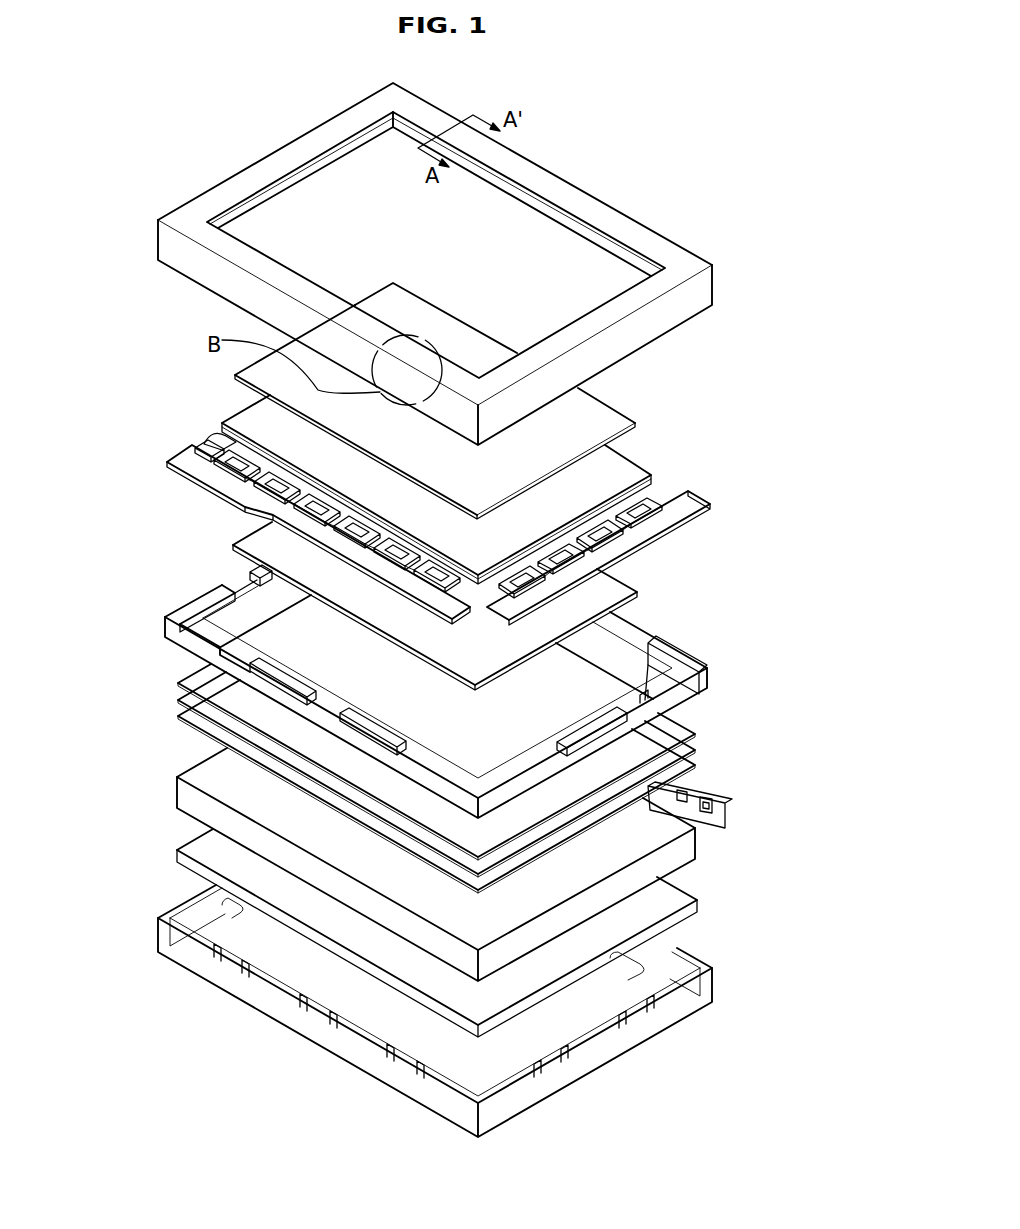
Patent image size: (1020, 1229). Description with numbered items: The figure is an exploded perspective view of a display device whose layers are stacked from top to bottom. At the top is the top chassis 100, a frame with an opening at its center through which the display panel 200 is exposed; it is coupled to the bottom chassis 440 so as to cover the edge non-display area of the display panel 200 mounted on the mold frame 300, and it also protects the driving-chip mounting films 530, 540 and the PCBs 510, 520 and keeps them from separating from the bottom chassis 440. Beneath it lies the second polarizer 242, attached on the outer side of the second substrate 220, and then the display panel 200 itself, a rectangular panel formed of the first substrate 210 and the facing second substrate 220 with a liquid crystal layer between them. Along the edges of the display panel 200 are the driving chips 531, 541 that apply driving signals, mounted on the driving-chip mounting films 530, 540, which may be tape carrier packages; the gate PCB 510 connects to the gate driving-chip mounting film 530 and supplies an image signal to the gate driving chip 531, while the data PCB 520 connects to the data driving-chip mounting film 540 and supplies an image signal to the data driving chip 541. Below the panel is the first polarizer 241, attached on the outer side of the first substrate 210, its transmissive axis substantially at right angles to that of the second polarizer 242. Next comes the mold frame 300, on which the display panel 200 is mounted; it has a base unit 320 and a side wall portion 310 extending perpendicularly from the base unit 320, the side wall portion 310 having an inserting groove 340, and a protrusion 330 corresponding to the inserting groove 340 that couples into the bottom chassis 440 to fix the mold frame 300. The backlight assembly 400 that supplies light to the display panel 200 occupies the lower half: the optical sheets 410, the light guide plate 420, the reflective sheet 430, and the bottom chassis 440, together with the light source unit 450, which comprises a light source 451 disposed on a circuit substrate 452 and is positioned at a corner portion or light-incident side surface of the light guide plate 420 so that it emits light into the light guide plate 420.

The top chassis 100 is at (698, 297).
The display panel 200 is at (535, 489).
The first substrate 210 is at (666, 482).
The second substrate 220 is at (646, 462).
The first polarizer 241 is at (600, 578).
The second polarizer 242 is at (588, 407).
The mold frame 300 is at (499, 691).
The side wall portion 310 is at (683, 693).
The base unit 320 is at (662, 655).
The protrusion 330 is at (666, 736).
The inserting groove 340 is at (640, 712).
The backlight assembly 400 is at (437, 900).
The optical sheets 410 is at (178, 715).
The light guide plate 420 is at (185, 795).
The reflective sheet 430 is at (185, 863).
The bottom chassis 440 is at (196, 962).
The light source unit 450 is at (746, 809).
The light source 451 is at (712, 793).
The circuit substrate 452 is at (724, 822).
The gate PCB 510 is at (683, 498).
The data PCB 520 is at (212, 473).
The gate driving-chip mounting film 530 is at (493, 524).
The gate driving chip 531 is at (650, 498).
The data driving-chip mounting film 540 is at (222, 446).
The data driving chip 541 is at (205, 458).